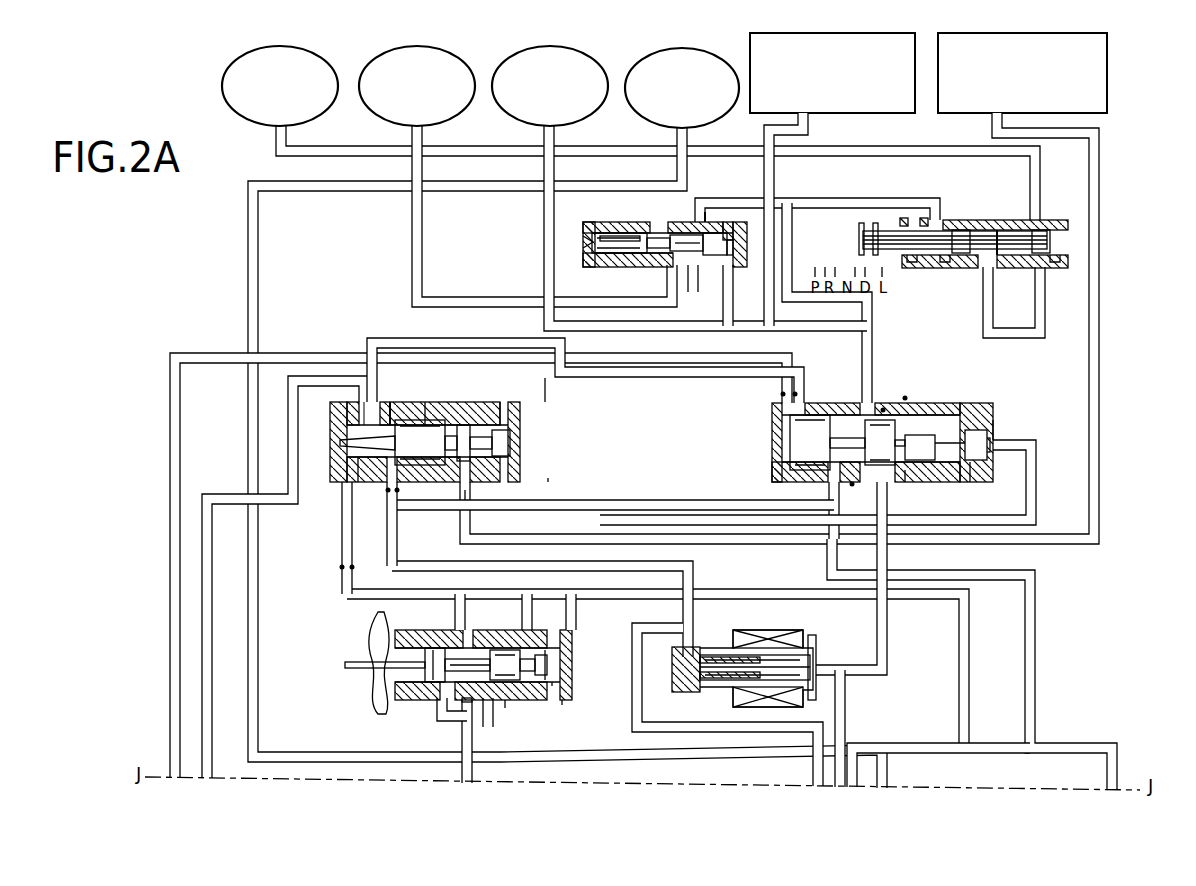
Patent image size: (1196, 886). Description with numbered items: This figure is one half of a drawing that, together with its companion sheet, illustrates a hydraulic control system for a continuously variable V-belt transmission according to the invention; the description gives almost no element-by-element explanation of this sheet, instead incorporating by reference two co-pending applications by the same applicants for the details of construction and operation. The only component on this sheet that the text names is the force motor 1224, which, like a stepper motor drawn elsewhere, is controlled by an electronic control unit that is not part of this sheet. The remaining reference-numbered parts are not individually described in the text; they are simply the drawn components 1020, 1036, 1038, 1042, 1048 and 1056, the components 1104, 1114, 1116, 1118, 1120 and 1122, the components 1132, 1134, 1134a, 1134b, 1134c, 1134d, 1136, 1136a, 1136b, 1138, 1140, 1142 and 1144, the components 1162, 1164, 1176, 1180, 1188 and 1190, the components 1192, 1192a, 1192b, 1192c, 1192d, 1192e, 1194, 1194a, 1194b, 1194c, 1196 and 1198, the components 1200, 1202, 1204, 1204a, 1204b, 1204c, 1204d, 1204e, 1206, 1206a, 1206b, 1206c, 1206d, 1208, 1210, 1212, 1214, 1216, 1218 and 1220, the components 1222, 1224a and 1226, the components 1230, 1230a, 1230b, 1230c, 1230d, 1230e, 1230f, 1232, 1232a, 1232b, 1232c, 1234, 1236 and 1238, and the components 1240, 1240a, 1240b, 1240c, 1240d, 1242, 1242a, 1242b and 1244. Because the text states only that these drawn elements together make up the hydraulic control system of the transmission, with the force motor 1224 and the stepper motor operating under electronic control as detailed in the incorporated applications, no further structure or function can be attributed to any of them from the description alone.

The pitot tube (engine speed) 1020 is at (1108, 102).
The forward clutch 1036 is at (333, 120).
The reverse clutch 1038 is at (466, 120).
The drive pulley 1042 is at (600, 120).
The pitot tube (drive pulley speed) 1048 is at (868, 116).
The driven pulley 1056 is at (740, 120).
The manual valve spool position mark 1104 is at (998, 210).
The throttle valve 1114 is at (372, 609).
The clutch control valve 1116 is at (330, 490).
The solenoid valve 1118 is at (812, 650).
The pressure regulator valve 1120 is at (768, 427).
The valve end plug 1122 is at (732, 205).
The driven pulley pressure line 1132 is at (318, 192).
The manual valve 1134 is at (1070, 233).
The manual valve port 1134a is at (910, 268).
The manual valve port 1134b is at (945, 268).
The manual valve exhaust passage 1134c is at (1003, 270).
The manual valve port 1134d is at (1055, 270).
The manual valve spool 1136 is at (887, 232).
The spool land 1136a is at (960, 230).
The spool land 1136b is at (1045, 230).
The detent 1138 is at (895, 216).
The line pressure passage 1140 is at (450, 549).
The forward clutch supply line 1142 is at (945, 146).
The reverse clutch supply line 1144 is at (428, 297).
The exhaust line 1162 is at (568, 645).
The passage 1164 is at (602, 722).
The passage 1176 is at (888, 660).
The drive pulley pressure line 1180 is at (545, 217).
The supply passage 1188 is at (170, 444).
The passage 1190 is at (232, 496).
The throttle valve bore 1192 is at (455, 628).
The throttle valve port 1192a is at (435, 704).
The throttle valve port 1192b is at (462, 752).
The throttle valve port 1192c is at (505, 708).
The throttle valve port 1192d is at (562, 705).
The throttle valve port 1192e is at (552, 686).
The throttle valve spool 1194 is at (548, 662).
The spool land 1194a is at (433, 650).
The spool land 1194b is at (530, 648).
The spool land 1194c is at (545, 650).
The throttle cam 1196 is at (392, 672).
The throttle plunger 1198 is at (368, 683).
The passage 1200 is at (1072, 742).
The passage 1202 is at (548, 590).
The clutch valve spool 1204 is at (448, 402).
The spool plunger 1204a is at (343, 440).
The valve port 1204b is at (345, 500).
The valve port 1204c is at (467, 488).
The valve port 1204d is at (548, 476).
The spool land 1204e is at (523, 450).
The spool land 1206 is at (512, 438).
The valve port 1206a is at (363, 400).
The valve port 1206b is at (428, 415).
The valve port 1206c is at (545, 378).
The valve port 1206d is at (508, 386).
The valve port 1208 is at (396, 400).
The passage 1210 is at (340, 569).
The passage 1212 is at (702, 590).
The engine speed pressure line 1214 is at (1103, 128).
The passage 1216 is at (393, 494).
The passage 1218 is at (468, 512).
The spool land 1220 is at (515, 403).
The solenoid valve seat 1222 is at (676, 692).
The force motor 1224 is at (760, 638).
The solenoid armature 1224a is at (738, 655).
The passage 1226 is at (648, 628).
The regulator valve spool 1230 is at (792, 460).
The valve port 1230a is at (781, 392).
The valve port 1230b is at (793, 398).
The spool stem 1230c is at (872, 418).
The valve port 1230d is at (880, 408).
The spool groove 1230e is at (912, 398).
The spool end 1230f is at (995, 426).
The regulator spring plunger 1232 is at (995, 452).
The valve port 1232a is at (852, 486).
The valve port 1232b is at (905, 482).
The valve port 1232c is at (975, 486).
The spool land 1234 is at (932, 425).
The passage 1236 is at (782, 356).
The valve port 1238 is at (905, 396).
The shift valve 1240 is at (590, 222).
The spool land 1240a is at (658, 235).
The spool land 1240b is at (690, 236).
The valve port 1240c is at (748, 218).
The passage 1240d is at (817, 303).
The shift valve spool 1242 is at (582, 258).
The spool stem 1242a is at (640, 267).
The valve port 1242b is at (690, 280).
The valve end 1244 is at (588, 268).